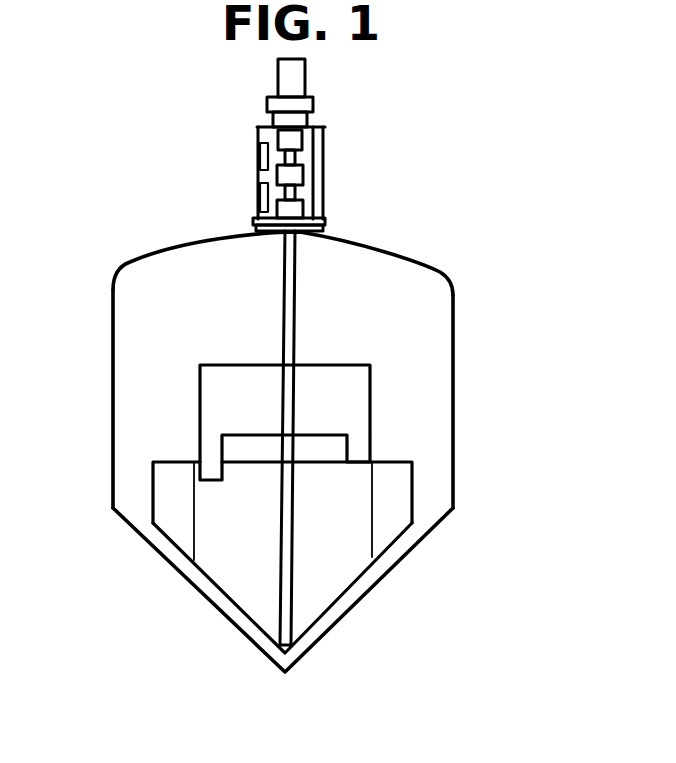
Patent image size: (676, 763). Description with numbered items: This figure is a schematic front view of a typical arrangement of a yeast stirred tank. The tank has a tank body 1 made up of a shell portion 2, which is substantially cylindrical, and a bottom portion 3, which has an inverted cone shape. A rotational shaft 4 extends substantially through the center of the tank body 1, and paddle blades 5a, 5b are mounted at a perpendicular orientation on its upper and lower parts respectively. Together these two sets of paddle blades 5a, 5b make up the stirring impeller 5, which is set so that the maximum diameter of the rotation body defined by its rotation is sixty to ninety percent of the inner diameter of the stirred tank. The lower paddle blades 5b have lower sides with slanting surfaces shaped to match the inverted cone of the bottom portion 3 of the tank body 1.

The tank body 1 is at (289, 371).
The shell portion 2 is at (455, 415).
The bottom portion 3 is at (392, 570).
The rotational shaft 4 is at (288, 318).
The stirring impeller 5 is at (228, 573).
The paddle blades 5a is at (225, 407).
The lower paddle blades 5b is at (228, 572).